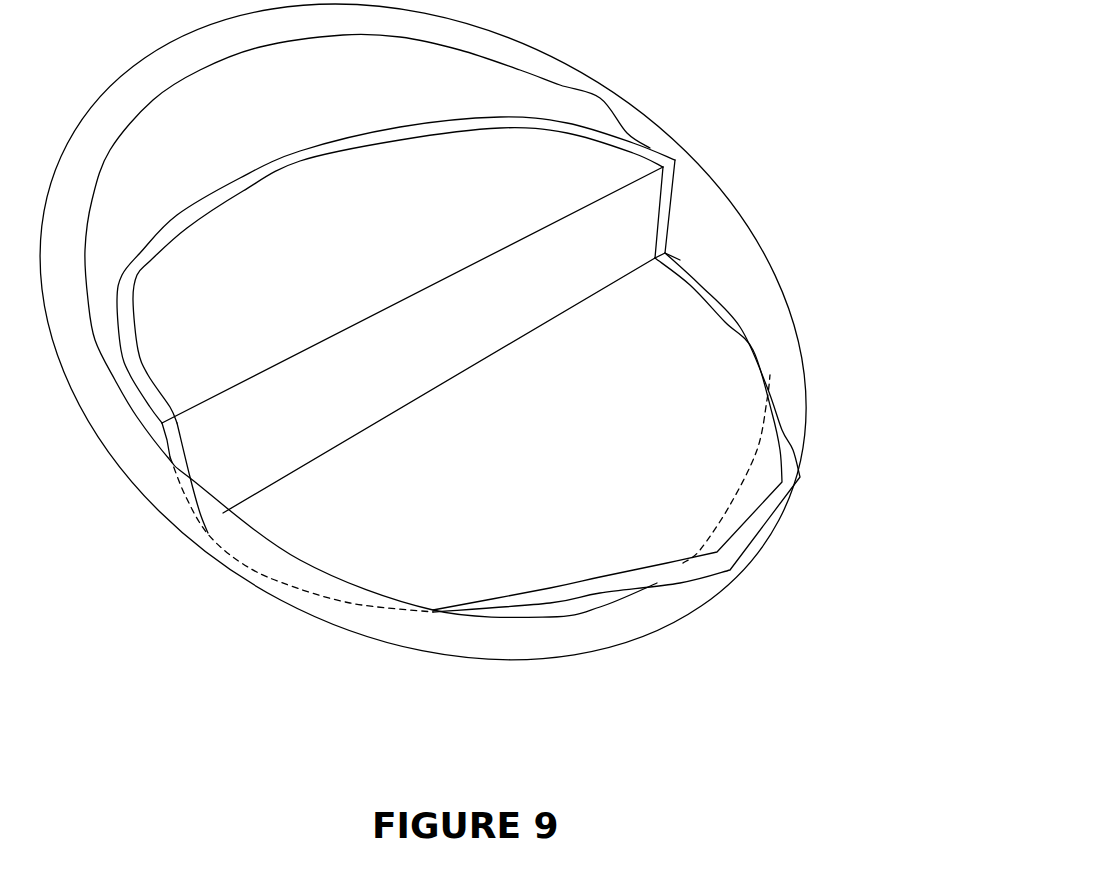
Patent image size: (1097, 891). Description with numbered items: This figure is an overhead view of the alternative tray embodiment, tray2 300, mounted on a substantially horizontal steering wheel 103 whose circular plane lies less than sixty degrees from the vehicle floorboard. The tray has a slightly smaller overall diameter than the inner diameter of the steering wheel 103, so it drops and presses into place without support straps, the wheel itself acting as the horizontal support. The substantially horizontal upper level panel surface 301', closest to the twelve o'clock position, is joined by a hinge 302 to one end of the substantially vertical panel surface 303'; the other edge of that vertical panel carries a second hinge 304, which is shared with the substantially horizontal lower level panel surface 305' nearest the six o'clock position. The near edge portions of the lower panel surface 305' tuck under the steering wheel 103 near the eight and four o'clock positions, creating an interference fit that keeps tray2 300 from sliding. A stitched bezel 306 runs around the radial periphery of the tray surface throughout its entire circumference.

The steering wheel 103 is at (115, 100).
The tray2 300 is at (465, 314).
The bezel 306 is at (242, 185).
The upper level panel surface 301' is at (412, 295).
The hinge 302 is at (162, 422).
The vertical panel surface 303' is at (370, 407).
The hinge 304 is at (630, 273).
The lower level panel surface 305' is at (616, 432).